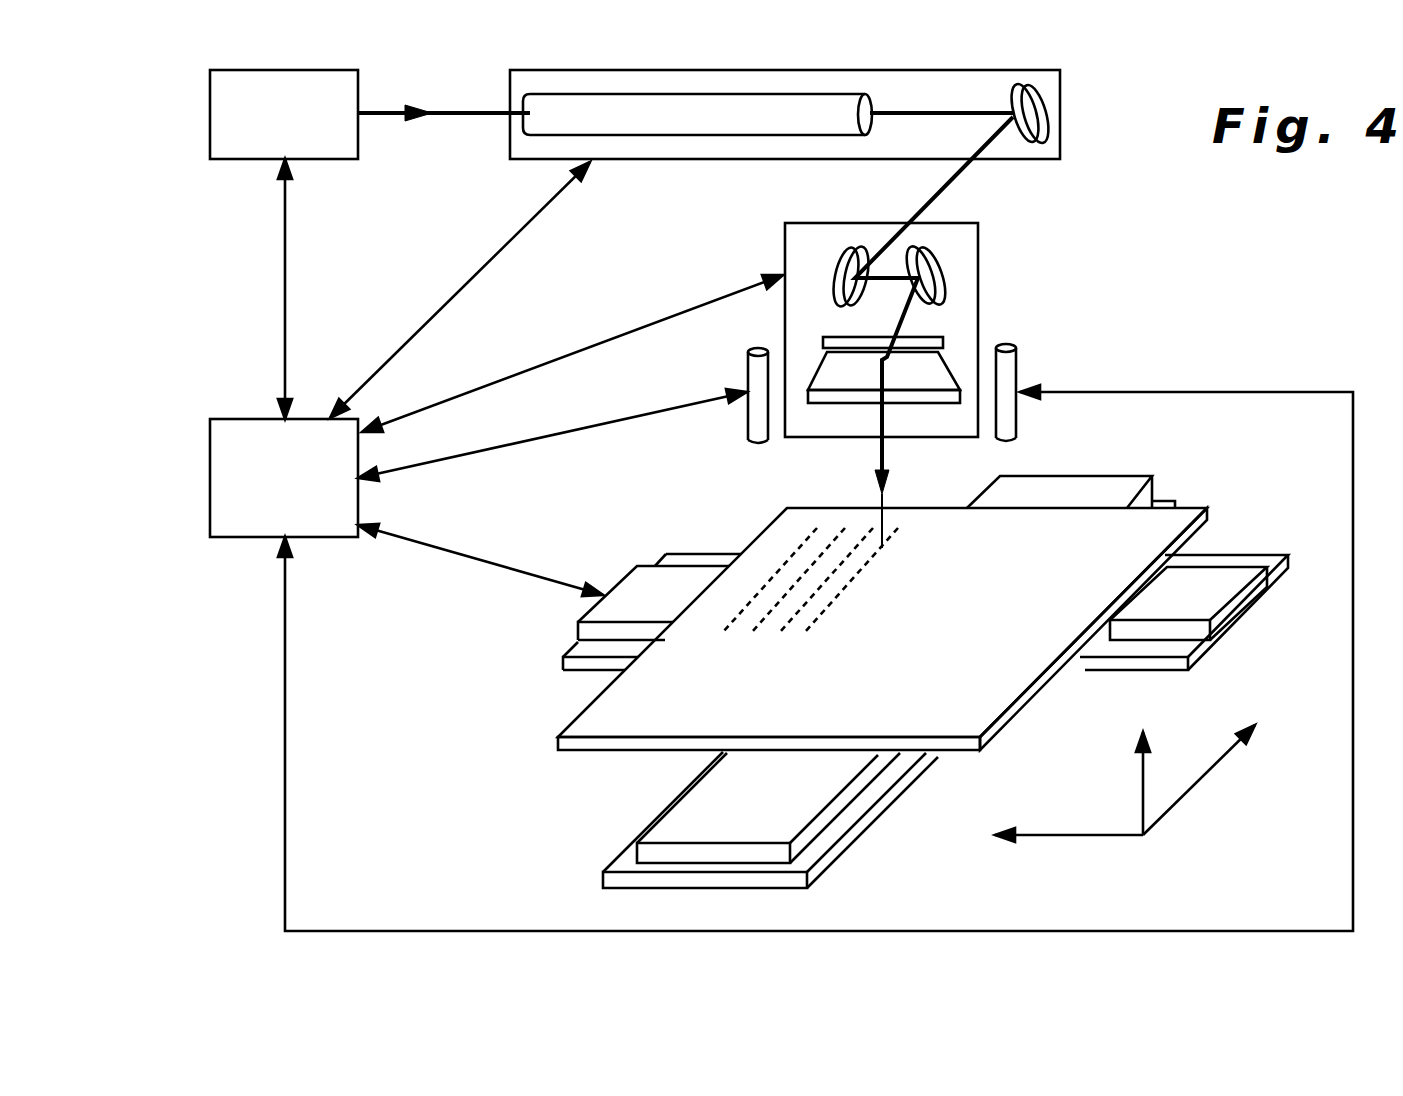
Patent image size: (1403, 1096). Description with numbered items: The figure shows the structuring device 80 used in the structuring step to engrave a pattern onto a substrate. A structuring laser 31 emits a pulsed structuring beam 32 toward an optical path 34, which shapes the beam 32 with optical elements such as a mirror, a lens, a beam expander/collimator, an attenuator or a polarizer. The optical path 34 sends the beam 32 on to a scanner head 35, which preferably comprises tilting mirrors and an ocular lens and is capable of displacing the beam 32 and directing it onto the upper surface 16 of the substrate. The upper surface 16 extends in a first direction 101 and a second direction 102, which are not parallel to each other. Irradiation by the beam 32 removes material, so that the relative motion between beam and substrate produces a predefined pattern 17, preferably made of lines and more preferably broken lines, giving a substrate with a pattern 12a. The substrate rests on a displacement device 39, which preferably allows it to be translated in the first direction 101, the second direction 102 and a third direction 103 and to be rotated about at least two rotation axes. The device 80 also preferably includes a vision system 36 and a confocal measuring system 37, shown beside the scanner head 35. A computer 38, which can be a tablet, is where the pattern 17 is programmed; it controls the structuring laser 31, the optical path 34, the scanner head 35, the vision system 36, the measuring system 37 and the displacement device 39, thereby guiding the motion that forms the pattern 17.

The structuring device 80 is at (1178, 338).
The structuring laser 31 is at (210, 115).
The structuring beam 32 is at (440, 113).
The optical path 34 is at (787, 68).
The scanner head 35 is at (980, 278).
The vision system 36 is at (745, 423).
The confocal measuring system 37 is at (1018, 418).
The computer 38 is at (210, 478).
The upper surface 16 is at (1137, 547).
The pattern 17 is at (815, 560).
The substrate with a pattern 12a is at (1010, 712).
The displacement device 39 is at (608, 864).
The first direction 101 is at (1198, 783).
The second direction 102 is at (1062, 837).
The third direction 103 is at (1138, 770).